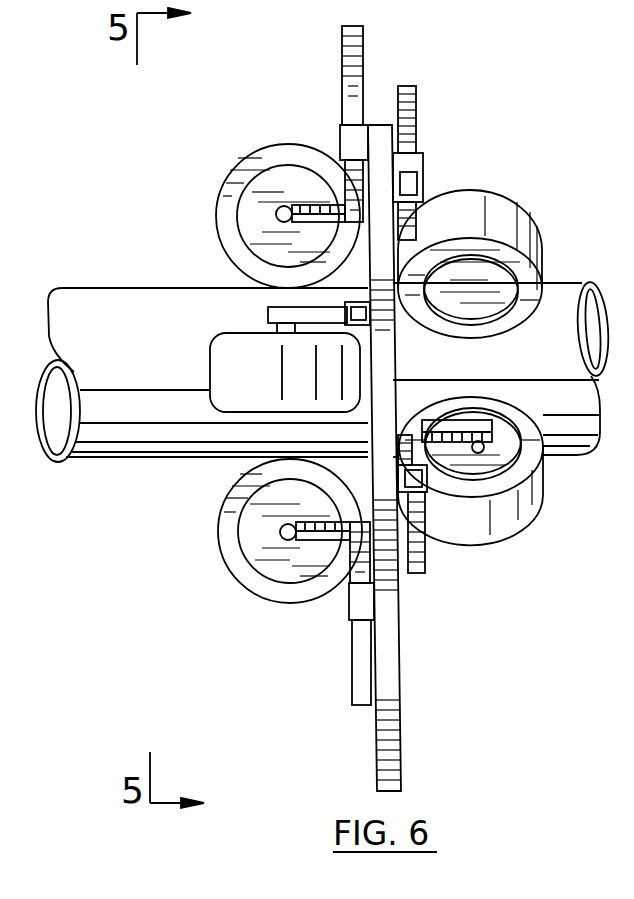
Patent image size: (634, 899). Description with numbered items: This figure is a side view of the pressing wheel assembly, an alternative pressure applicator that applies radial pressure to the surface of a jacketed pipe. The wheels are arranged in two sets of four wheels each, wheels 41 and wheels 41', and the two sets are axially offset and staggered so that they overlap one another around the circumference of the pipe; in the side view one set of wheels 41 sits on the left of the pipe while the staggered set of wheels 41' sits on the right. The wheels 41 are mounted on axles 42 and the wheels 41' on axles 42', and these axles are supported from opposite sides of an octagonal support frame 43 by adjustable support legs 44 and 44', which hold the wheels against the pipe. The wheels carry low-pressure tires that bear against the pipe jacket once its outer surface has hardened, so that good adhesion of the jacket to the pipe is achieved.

The wheel 41 is at (244, 373).
The wheel 41' is at (493, 362).
The axle 42 is at (288, 325).
The axle 42' is at (510, 458).
The octagonal support frame 43 is at (380, 134).
The adjustable support leg 44 is at (323, 124).
The adjustable support leg 44' is at (426, 613).